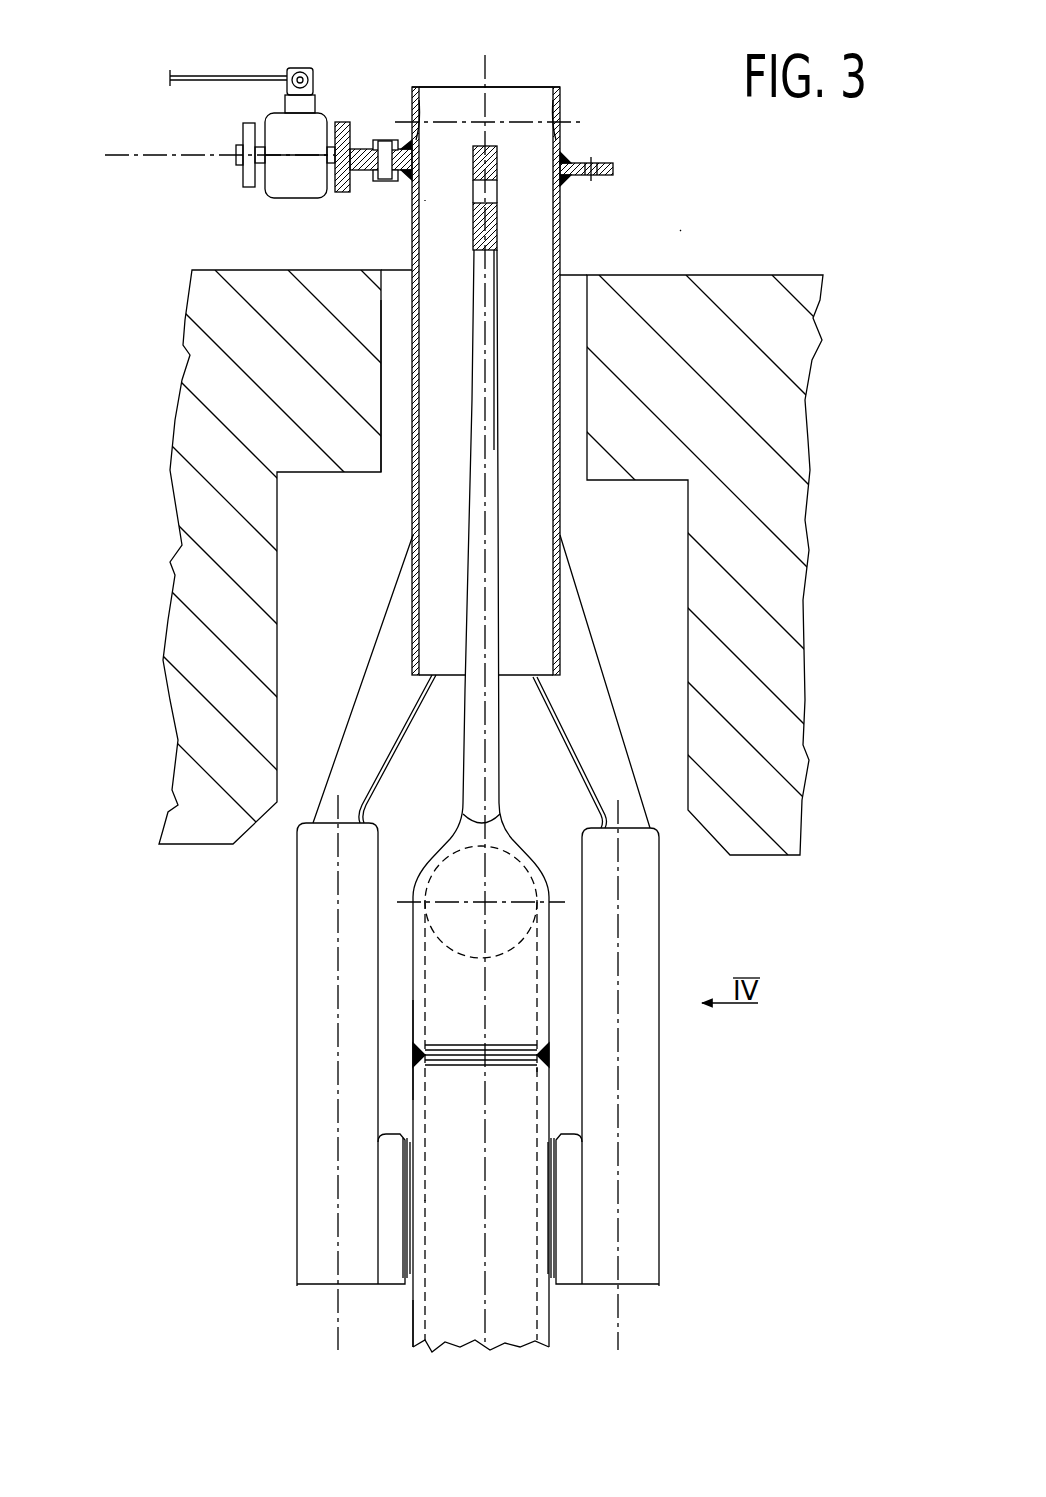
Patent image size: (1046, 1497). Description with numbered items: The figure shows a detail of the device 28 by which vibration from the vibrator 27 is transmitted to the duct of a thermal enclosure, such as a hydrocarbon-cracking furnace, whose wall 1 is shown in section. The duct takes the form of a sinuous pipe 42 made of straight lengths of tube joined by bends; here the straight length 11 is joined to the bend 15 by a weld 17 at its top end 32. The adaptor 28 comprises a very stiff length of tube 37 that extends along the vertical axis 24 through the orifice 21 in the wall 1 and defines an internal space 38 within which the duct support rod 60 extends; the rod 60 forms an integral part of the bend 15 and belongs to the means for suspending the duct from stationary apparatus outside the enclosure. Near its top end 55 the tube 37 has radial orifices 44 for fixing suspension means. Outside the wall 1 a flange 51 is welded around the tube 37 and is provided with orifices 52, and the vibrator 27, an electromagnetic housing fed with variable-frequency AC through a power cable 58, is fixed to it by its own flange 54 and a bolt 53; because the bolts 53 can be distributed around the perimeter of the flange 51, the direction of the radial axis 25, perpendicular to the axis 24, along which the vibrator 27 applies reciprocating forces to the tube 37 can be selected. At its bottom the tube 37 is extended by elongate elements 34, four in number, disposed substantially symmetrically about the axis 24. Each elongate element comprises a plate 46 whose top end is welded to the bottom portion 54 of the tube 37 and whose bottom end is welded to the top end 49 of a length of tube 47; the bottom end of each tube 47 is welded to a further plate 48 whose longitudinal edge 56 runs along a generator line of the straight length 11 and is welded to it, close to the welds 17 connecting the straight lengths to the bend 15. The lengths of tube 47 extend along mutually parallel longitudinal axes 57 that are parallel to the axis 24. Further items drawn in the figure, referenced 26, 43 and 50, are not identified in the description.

The wall 1 is at (740, 306).
The straight length of tube 11 is at (553, 1098).
The bend 15 is at (519, 830).
The weld 17 is at (410, 1055).
The orifice 21 is at (568, 455).
The axis 24 is at (490, 62).
The radial axis 25 is at (123, 150).
The piston rod 26 is at (481, 1242).
The vibrator 27 is at (228, 186).
The device for transmitting vibration 28 is at (683, 228).
The top end of straight length of tube 32 is at (533, 1075).
The elongate elements 34 is at (368, 624).
The length of tube 37 is at (563, 255).
The space 38 is at (540, 378).
The sinuous pipe 42 is at (518, 1323).
The plug 43 is at (478, 196).
The radial orifices 44 is at (559, 117).
The plate 46 is at (370, 702).
The length of tube 47 is at (312, 1082).
The plate 48 is at (390, 1150).
The top end of length of tube 49 is at (320, 842).
The cylinder end 50 is at (306, 1288).
The flange 51 is at (597, 163).
The orifices 52 is at (593, 178).
The bolt 53 is at (387, 143).
The flange 54 is at (352, 122).
The top end of length of tube 55 is at (547, 84).
The longitudinal edge 56 is at (410, 1206).
The longitudinal axes 57 is at (336, 940).
The power cable 58 is at (218, 74).
The rod 60 is at (476, 472).